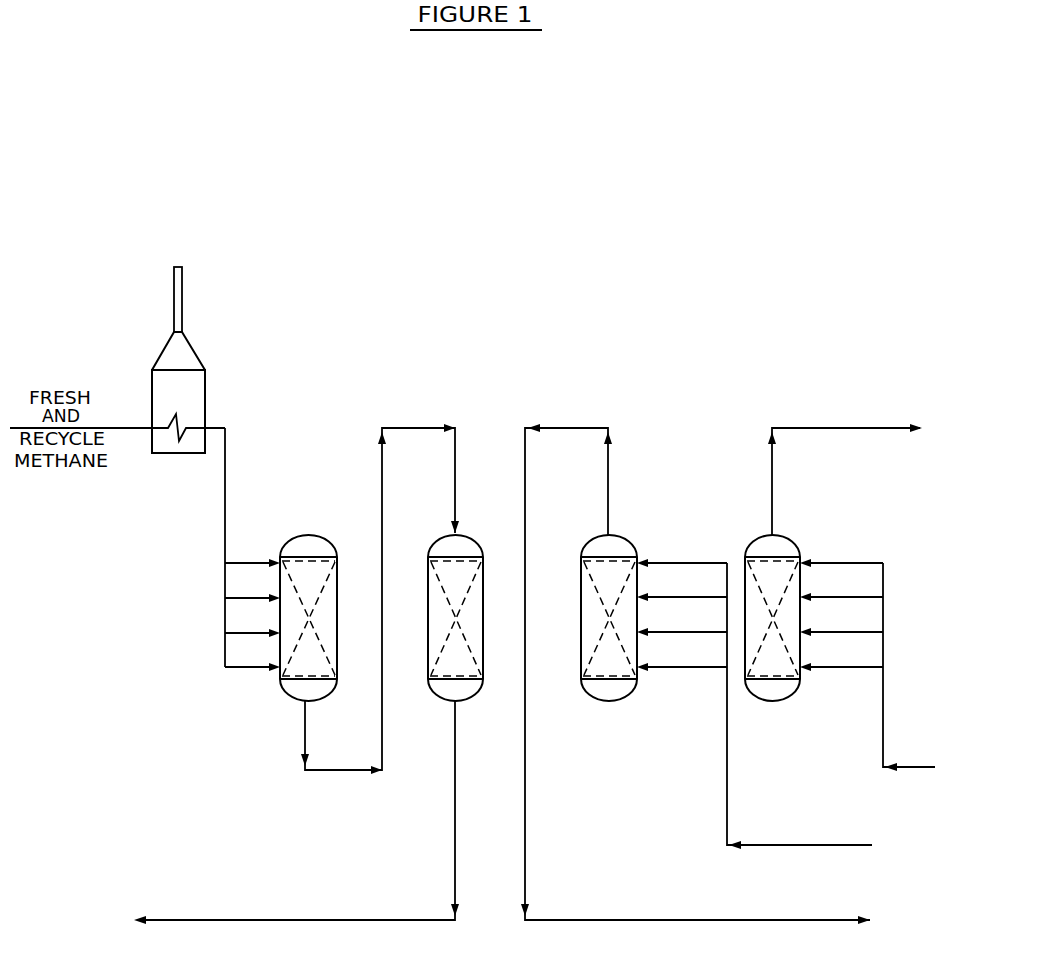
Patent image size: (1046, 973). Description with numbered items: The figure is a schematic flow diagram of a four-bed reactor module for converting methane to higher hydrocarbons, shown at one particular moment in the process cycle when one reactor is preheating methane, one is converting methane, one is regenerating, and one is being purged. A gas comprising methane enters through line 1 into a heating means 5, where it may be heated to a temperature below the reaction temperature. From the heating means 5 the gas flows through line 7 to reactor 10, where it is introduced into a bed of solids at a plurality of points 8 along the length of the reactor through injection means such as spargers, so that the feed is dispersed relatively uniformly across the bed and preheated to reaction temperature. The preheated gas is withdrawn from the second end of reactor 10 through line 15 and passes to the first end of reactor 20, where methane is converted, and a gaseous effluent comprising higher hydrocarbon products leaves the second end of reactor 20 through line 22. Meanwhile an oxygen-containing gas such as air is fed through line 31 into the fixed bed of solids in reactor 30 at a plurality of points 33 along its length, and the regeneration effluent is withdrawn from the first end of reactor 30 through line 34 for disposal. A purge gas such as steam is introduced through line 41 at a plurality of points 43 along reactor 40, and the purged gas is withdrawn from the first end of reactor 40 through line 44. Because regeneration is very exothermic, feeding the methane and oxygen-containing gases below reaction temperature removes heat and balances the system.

The line 1 is at (128, 428).
The heating means 5 is at (207, 378).
The line 7 is at (227, 475).
The plurality of points 8 is at (276, 559).
The reactor 10 is at (315, 702).
The line 15 is at (358, 770).
The reactor 20 is at (435, 700).
The line 22 is at (449, 833).
The reactor 30 is at (594, 698).
The line 31 is at (724, 806).
The plurality of points 33 is at (655, 562).
The line 34 is at (545, 427).
The reactor 40 is at (762, 698).
The line 41 is at (920, 770).
The plurality of points 43 is at (817, 562).
The line 44 is at (822, 428).